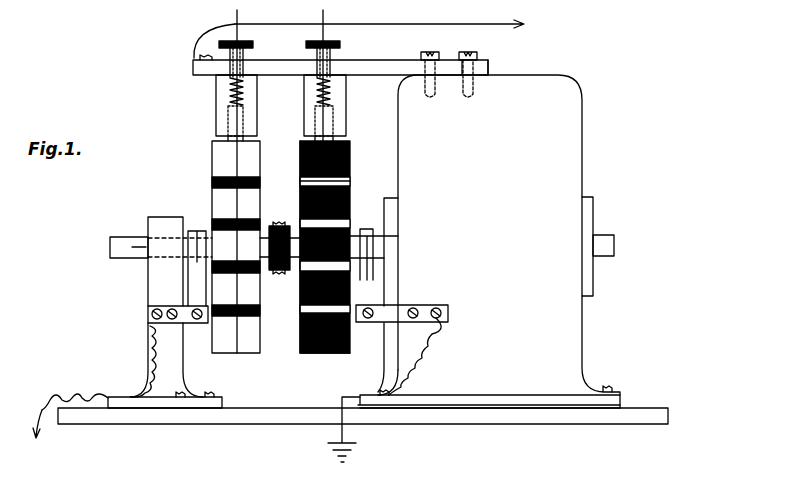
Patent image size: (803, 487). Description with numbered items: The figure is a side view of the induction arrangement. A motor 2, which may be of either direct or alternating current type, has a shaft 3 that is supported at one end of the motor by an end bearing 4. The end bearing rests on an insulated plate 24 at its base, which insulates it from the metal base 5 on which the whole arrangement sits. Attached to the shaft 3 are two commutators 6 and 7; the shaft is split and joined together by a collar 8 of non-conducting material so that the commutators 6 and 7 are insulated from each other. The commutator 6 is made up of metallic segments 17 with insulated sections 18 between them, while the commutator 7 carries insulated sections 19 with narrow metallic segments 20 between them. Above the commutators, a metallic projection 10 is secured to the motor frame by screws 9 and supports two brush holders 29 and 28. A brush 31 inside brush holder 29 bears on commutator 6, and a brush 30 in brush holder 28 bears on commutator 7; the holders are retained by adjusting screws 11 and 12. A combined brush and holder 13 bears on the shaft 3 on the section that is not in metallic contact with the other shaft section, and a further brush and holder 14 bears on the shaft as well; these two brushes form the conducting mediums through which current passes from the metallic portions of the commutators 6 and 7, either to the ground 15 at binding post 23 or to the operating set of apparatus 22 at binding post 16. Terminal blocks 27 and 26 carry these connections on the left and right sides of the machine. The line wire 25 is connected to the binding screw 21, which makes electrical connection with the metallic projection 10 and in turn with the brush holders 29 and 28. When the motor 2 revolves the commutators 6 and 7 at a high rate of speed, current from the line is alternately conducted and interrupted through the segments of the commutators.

The motor 2 is at (583, 97).
The shaft 3 is at (625, 222).
The end bearing 4 is at (158, 350).
The metal base 5 is at (668, 415).
The commutator 6 is at (260, 368).
The commutator 7 is at (303, 353).
The collar 8 is at (275, 225).
The screws 9 is at (468, 51).
The projection 10 is at (383, 60).
The adjusting screw 11 is at (246, 52).
The adjusting screw 12 is at (333, 52).
The combined brush and holder 13 is at (368, 232).
The brush and holder 14 is at (196, 262).
The ground 15 is at (350, 452).
The binding post 16 is at (72, 392).
The metallic segments 17 is at (260, 160).
The insulated sections 18 is at (260, 312).
The insulated sections 19 is at (350, 160).
The narrow metallic segments 20 is at (350, 181).
The binding screw 21 is at (194, 58).
The operating set of apparatus 22 is at (30, 437).
The binding post 23 is at (363, 394).
The insulated plate 24 is at (212, 409).
The line wire 25 is at (394, 26).
The terminal block 26 is at (448, 310).
The terminal block 27 is at (152, 312).
The brush holder 28 is at (347, 110).
The brush holder 29 is at (258, 110).
The brush 30 is at (337, 128).
The brush 31 is at (228, 125).